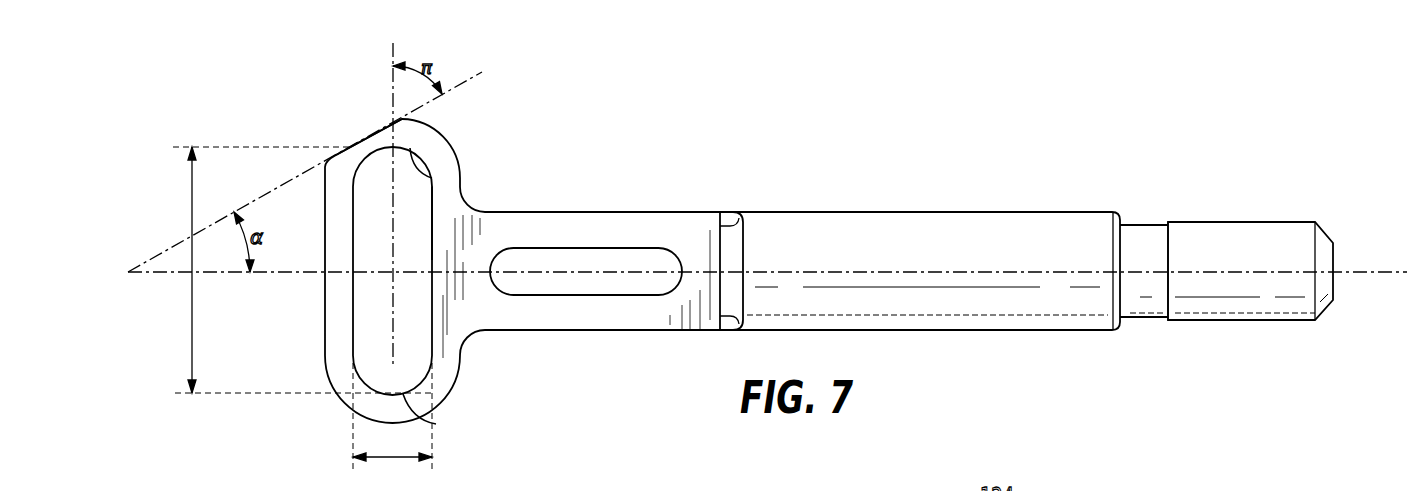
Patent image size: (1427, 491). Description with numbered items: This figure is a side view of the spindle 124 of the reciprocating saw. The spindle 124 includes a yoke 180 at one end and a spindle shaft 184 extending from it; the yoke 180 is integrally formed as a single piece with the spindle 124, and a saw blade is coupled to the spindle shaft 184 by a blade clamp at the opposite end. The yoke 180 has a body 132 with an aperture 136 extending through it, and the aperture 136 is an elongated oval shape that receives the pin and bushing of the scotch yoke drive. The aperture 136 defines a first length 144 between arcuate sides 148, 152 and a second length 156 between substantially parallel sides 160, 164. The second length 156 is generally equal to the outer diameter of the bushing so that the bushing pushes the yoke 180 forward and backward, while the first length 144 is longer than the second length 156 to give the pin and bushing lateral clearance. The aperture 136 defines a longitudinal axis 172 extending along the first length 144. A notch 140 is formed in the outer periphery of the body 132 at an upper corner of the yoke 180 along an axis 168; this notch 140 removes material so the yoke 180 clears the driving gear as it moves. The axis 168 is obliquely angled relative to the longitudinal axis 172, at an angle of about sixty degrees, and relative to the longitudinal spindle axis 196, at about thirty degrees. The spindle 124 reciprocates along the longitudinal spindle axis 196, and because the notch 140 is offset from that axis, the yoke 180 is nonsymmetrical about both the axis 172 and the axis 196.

The spindle 124 is at (974, 174).
The body 132 is at (440, 384).
The aperture 136 is at (431, 178).
The notch 140 is at (371, 138).
The first length 144 is at (192, 220).
The arcuate side 148 is at (413, 144).
The arcuate side 152 is at (436, 424).
The second length 156 is at (393, 460).
The parallel side 160 is at (353, 320).
The parallel side 164 is at (437, 322).
The axis of the notch 168 is at (469, 82).
The longitudinal axis of the aperture 172 is at (391, 57).
The yoke 180 is at (447, 193).
The spindle shaft 184 is at (665, 310).
The longitudinal spindle axis 196 is at (1364, 262).